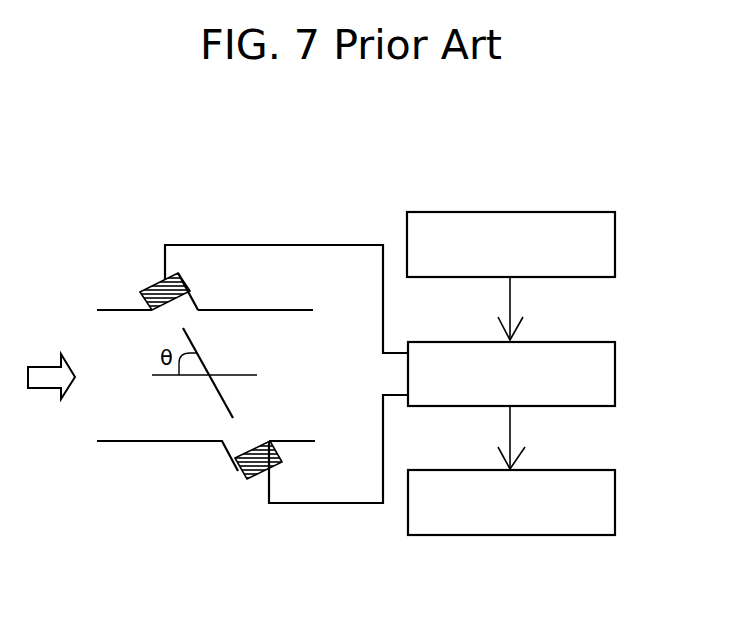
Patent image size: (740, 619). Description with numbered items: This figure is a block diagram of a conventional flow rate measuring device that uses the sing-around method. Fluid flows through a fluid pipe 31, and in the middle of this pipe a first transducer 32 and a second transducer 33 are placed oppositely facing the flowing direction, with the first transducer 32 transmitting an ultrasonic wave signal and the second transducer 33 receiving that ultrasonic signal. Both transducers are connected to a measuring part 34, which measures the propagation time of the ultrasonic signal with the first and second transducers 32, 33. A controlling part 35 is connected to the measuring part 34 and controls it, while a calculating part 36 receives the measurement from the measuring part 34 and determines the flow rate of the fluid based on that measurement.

The fluid pipe 31 is at (130, 441).
The first transducer 32 is at (148, 283).
The second transducer 33 is at (240, 470).
The measuring part 34 is at (617, 368).
The controlling part 35 is at (616, 245).
The calculating part 36 is at (617, 493).